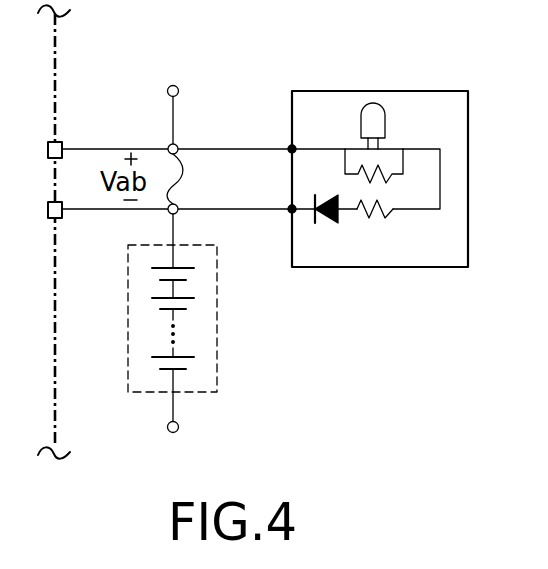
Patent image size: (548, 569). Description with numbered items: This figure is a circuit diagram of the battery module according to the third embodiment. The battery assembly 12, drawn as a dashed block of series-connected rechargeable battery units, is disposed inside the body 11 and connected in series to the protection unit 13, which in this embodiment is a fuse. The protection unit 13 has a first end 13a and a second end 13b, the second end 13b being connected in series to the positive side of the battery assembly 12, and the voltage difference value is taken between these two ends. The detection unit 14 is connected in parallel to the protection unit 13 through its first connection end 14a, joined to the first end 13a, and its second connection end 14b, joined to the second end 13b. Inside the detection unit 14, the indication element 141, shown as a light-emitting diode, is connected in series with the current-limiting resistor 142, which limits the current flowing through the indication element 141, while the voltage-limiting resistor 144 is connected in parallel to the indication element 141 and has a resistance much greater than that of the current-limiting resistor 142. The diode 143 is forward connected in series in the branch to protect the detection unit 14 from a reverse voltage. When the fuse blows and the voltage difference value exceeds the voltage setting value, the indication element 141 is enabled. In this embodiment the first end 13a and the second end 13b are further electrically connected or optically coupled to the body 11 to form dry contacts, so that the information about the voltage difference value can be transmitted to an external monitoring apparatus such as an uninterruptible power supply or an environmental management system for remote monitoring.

The body 11 is at (56, 75).
The battery assembly 12 is at (135, 317).
The protection unit 13 is at (179, 170).
The first end 13a is at (176, 145).
The second end 13b is at (177, 214).
The detection unit 14 is at (380, 163).
The first connection end 14a is at (292, 147).
The second connection end 14b is at (291, 214).
The indication element 141 is at (377, 120).
The current-limiting resistor 142 is at (383, 220).
The diode 143 is at (324, 220).
The voltage-limiting resistor 144 is at (360, 177).